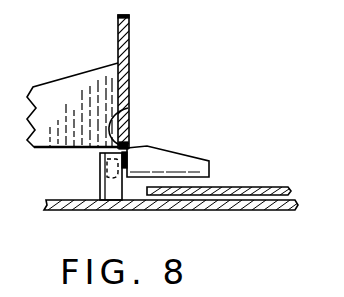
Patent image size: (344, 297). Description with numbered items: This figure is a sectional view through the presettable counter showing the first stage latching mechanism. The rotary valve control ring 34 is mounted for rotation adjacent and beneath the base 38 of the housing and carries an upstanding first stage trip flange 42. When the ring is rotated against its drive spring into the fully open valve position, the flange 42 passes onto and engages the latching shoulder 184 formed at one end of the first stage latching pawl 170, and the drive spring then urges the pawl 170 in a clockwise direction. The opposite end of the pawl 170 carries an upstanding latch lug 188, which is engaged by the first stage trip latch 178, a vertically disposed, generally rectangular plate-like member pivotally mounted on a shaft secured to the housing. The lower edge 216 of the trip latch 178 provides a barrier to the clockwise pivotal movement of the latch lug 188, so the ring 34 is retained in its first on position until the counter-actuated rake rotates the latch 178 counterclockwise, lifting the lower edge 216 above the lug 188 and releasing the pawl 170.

The first stage trip latch 178 is at (130, 60).
The lower edge 216 is at (129, 107).
The latch lug 188 is at (149, 141).
The first stage latching pawl 170 is at (210, 163).
The first stage trip flange 42 is at (99, 160).
The latching shoulder 184 is at (99, 190).
The base 38 is at (268, 188).
The rotary valve control ring 34 is at (268, 215).